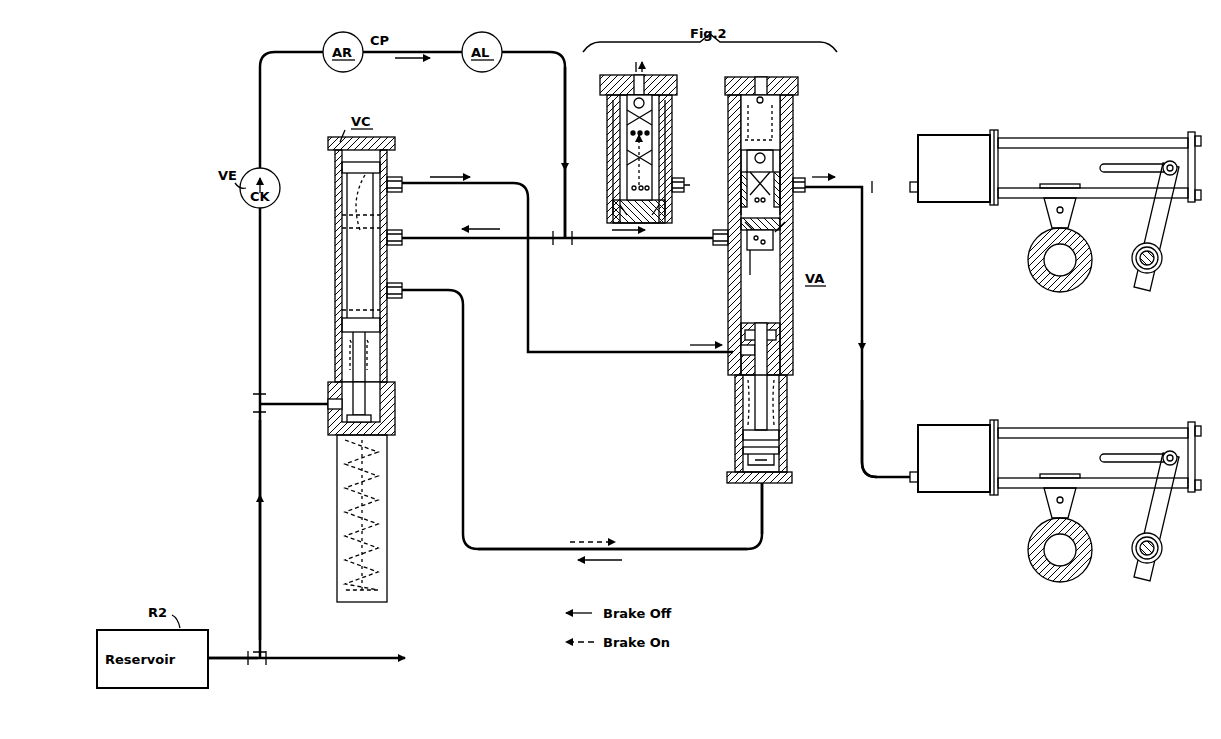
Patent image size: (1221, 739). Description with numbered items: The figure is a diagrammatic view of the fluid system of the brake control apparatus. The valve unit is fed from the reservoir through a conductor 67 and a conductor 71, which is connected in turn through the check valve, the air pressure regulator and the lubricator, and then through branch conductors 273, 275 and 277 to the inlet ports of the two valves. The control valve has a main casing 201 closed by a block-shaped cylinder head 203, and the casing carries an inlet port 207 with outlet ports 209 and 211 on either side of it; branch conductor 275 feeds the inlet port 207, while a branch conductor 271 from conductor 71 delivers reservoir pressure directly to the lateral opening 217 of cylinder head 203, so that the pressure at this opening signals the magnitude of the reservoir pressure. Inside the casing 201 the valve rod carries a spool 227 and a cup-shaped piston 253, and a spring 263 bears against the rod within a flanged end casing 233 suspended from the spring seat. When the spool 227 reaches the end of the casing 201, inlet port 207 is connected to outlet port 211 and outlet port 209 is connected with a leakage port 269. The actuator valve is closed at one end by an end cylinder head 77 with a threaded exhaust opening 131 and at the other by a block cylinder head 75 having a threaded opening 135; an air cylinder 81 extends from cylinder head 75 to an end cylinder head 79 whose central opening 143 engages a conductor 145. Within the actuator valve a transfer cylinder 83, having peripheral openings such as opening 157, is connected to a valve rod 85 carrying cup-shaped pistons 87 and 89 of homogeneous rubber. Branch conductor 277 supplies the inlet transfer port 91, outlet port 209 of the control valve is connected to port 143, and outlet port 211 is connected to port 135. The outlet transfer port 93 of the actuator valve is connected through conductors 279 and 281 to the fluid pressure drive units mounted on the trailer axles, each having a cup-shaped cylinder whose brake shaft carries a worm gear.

The conductor 67 is at (240, 658).
The conductor 71 is at (259, 538).
The block-shaped cylinder head 75 is at (790, 352).
The end cylinder head 77 is at (795, 90).
The end cylinder head 79 is at (792, 476).
The air cylinder 81 is at (736, 418).
The transfer cylinder 83 is at (648, 217).
The valve rod 85 is at (768, 396).
The cup-shaped piston 87 is at (779, 435).
The cup-shaped piston 89 is at (744, 451).
The inlet transfer port 91 is at (717, 246).
The outlet transfer port 93 is at (682, 180).
The opening 131 is at (760, 84).
The threaded tapered opening 135 is at (732, 345).
The central threaded opening 143 is at (766, 485).
The conductor 145 is at (722, 551).
The peripheral opening 157 is at (762, 252).
The main casing 201 is at (340, 226).
The block-shaped cylinder head 203 is at (392, 420).
The inlet port 207 is at (395, 232).
The outlet port 209 is at (393, 284).
The outlet port 211 is at (394, 178).
The lateral opening 217 is at (334, 398).
The spool 227 is at (342, 186).
The end cylindrical casing 233 is at (338, 574).
The cup-shaped piston 253 is at (380, 323).
The spring 263 is at (382, 505).
The leakage port 269 is at (341, 315).
The branch conductor 271 is at (305, 410).
The branch conductor 273 is at (558, 90).
The branch conductor 275 is at (625, 241).
The branch conductor 277 is at (505, 243).
The conductor 279 is at (884, 180).
The conductor 281 is at (882, 484).